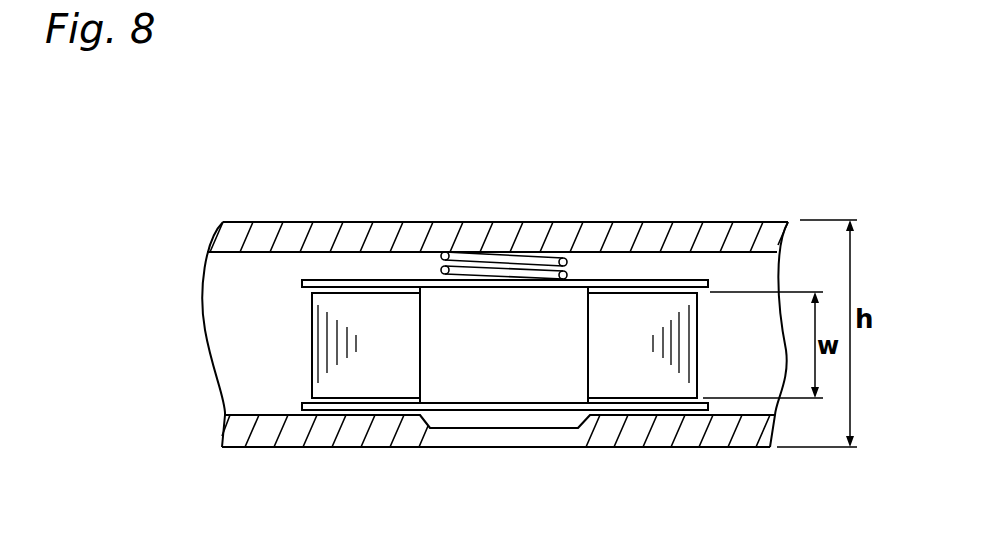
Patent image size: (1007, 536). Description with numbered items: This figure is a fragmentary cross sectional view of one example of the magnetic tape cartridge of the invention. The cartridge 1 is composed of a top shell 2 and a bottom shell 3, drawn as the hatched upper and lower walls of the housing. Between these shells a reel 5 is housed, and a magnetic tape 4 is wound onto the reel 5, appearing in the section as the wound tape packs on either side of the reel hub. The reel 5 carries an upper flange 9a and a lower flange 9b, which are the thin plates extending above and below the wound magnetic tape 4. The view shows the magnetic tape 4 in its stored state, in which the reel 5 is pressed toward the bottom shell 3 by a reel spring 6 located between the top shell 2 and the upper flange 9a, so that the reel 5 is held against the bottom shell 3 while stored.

The cartridge 1 is at (580, 214).
The top shell 2 is at (730, 234).
The bottom shell 3 is at (740, 432).
The magnetic tape 4 is at (370, 380).
The reel 5 is at (470, 380).
The reel spring 6 is at (484, 256).
The upper flange 9a is at (640, 280).
The lower flange 9b is at (646, 403).